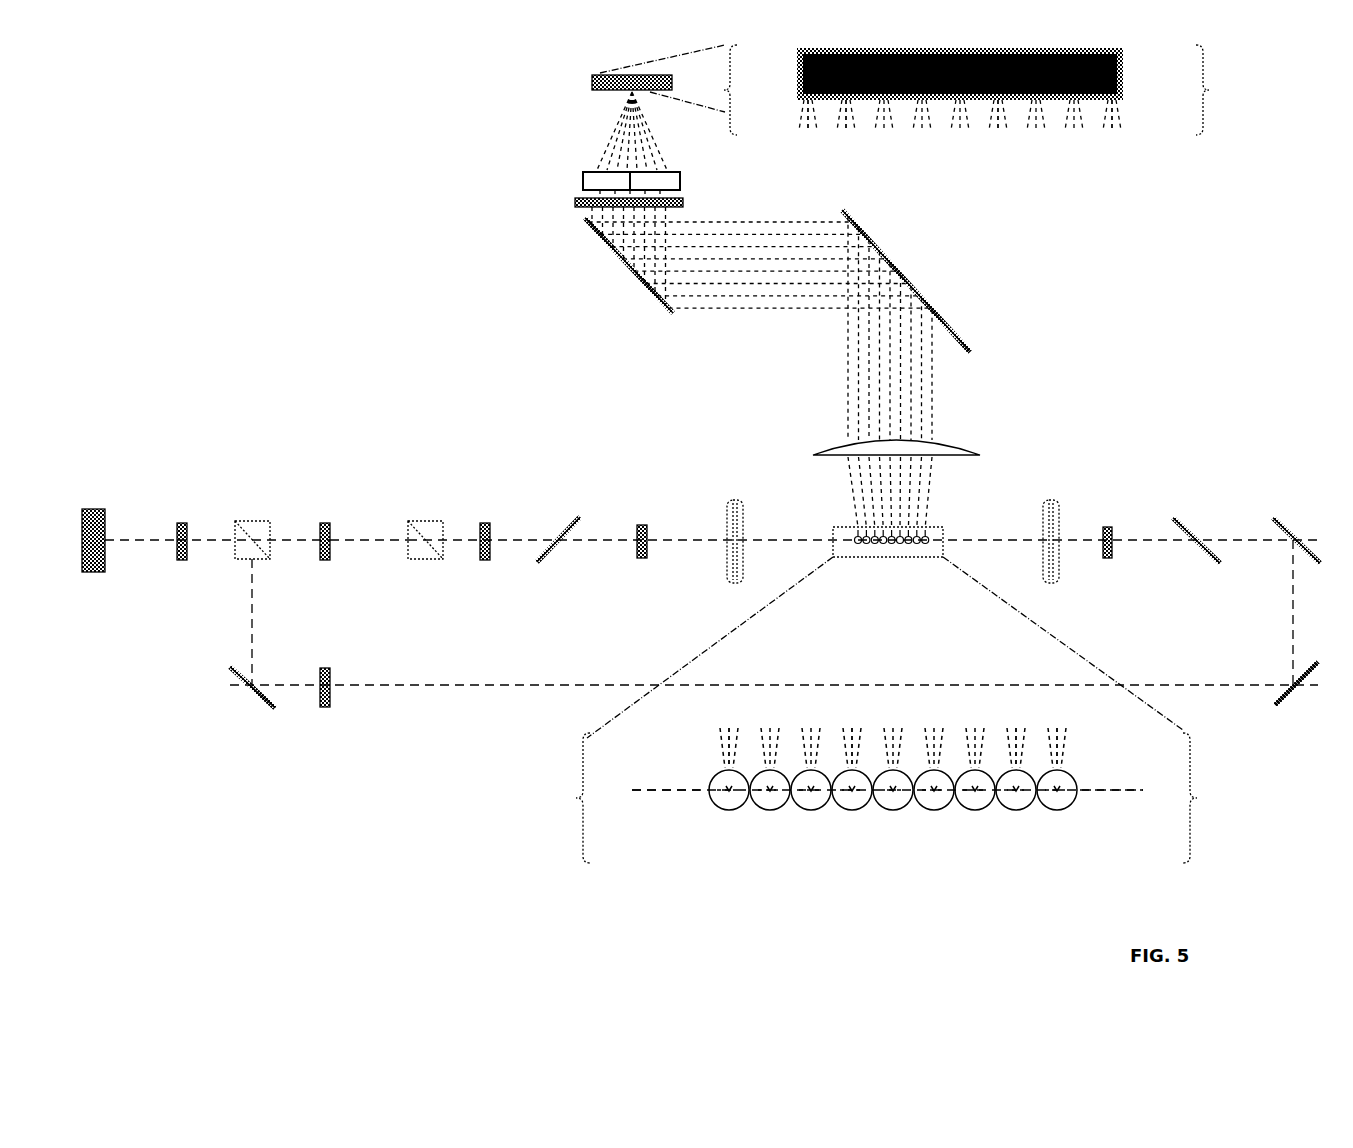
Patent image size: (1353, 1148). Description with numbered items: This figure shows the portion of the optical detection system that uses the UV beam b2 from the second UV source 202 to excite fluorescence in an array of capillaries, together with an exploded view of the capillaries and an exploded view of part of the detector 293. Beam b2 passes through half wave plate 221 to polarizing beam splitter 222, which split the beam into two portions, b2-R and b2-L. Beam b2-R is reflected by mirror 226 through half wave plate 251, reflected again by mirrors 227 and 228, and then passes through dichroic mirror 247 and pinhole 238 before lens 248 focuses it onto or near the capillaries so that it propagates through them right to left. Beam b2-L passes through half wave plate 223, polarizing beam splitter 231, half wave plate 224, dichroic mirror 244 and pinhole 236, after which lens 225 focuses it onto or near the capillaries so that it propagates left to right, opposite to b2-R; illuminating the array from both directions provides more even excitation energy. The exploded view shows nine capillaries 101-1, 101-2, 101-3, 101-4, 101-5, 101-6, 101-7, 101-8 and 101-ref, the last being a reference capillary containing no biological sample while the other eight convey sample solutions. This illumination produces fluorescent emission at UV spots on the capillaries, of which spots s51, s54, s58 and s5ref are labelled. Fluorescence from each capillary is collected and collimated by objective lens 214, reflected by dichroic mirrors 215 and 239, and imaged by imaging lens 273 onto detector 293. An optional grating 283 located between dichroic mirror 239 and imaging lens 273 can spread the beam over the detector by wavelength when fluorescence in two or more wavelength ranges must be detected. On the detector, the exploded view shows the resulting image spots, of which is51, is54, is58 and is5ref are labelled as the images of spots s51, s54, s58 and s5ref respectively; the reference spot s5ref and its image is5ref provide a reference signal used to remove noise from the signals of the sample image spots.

The second UV source 202 is at (106, 512).
The half wave plate 221 is at (190, 520).
The polarizing beam splitter 222 is at (272, 518).
The half wave plate 223 is at (332, 520).
The polarizing beam splitter 231 is at (445, 520).
The half wave plate 224 is at (492, 520).
The dichroic mirror 244 is at (582, 518).
The pinhole 236 is at (648, 526).
The lens 225 is at (742, 505).
The objective lens 214 is at (982, 453).
The dichroic mirror 215 is at (965, 350).
The dichroic mirror 239 is at (682, 330).
The imaging lens 273 is at (580, 184).
The grating 283 is at (702, 195).
The detector 293 is at (600, 95).
The lens 248 is at (1059, 503).
The dichroic mirror 247 is at (1172, 516).
The mirror 228 is at (1270, 518).
The pinhole 238 is at (1112, 556).
The mirror 227 is at (1288, 712).
The mirror 226 is at (248, 706).
The half wave plate 251 is at (330, 706).
The UV beam b2 is at (136, 548).
The beam b2-L is at (360, 548).
The beam b2-R is at (254, 632).
The capillary 101-1 is at (731, 812).
The capillary 101-2 is at (771, 812).
The capillary 101-3 is at (812, 812).
The capillary 101-4 is at (853, 812).
The capillary 101-5 is at (894, 812).
The capillary 101-6 is at (935, 812).
The capillary 101-7 is at (976, 812).
The capillary 101-8 is at (1017, 812).
The reference capillary 101-ref is at (1060, 812).
The UV spot s51 is at (720, 788).
The UV spot s54 is at (846, 786).
The UV spot s58 is at (1022, 786).
The reference UV spot s5ref is at (1064, 786).
The image spot is51 is at (1114, 100).
The image spot is54 is at (996, 100).
The image spot is58 is at (849, 100).
The reference image spot is5ref is at (804, 100).